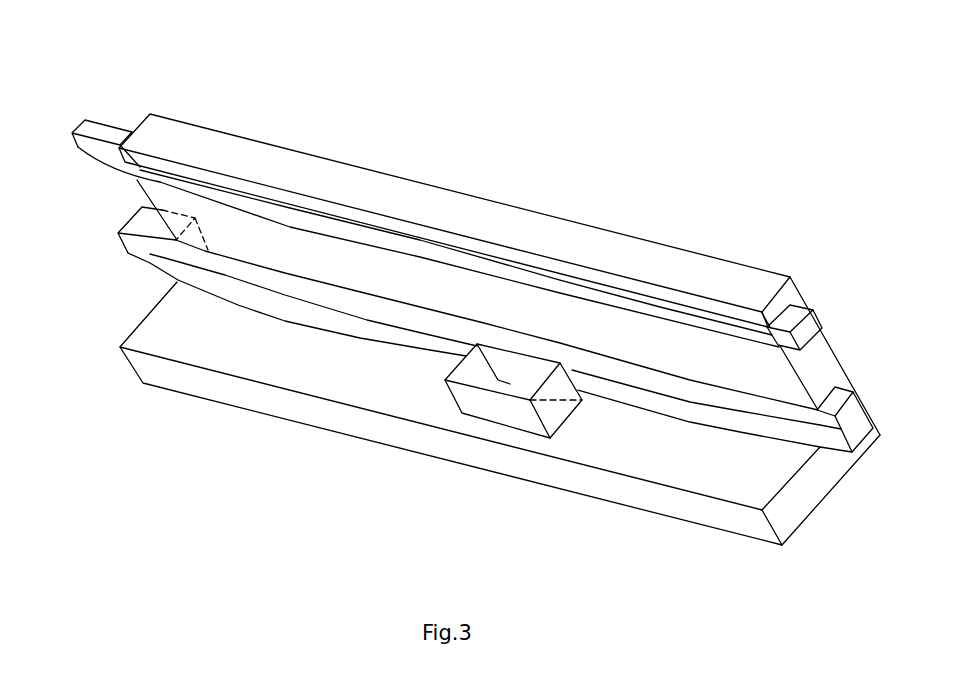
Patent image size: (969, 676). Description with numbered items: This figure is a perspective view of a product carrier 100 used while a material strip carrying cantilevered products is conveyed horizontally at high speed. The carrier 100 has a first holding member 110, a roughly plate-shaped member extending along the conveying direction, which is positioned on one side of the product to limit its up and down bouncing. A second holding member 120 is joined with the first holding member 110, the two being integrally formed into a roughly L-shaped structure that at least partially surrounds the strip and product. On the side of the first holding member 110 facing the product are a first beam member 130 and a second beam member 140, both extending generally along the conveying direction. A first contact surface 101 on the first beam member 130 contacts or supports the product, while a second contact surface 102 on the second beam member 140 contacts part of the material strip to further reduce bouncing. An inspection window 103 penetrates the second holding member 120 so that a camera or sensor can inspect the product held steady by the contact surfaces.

The carrier 100 is at (427, 55).
The first holding member 110 is at (614, 247).
The second holding member 120 is at (298, 402).
The first beam member 130 is at (96, 136).
The second beam member 140 is at (854, 443).
The first contact surface 101 is at (157, 181).
The second contact surface 102 is at (187, 275).
The inspection window 103 is at (515, 388).